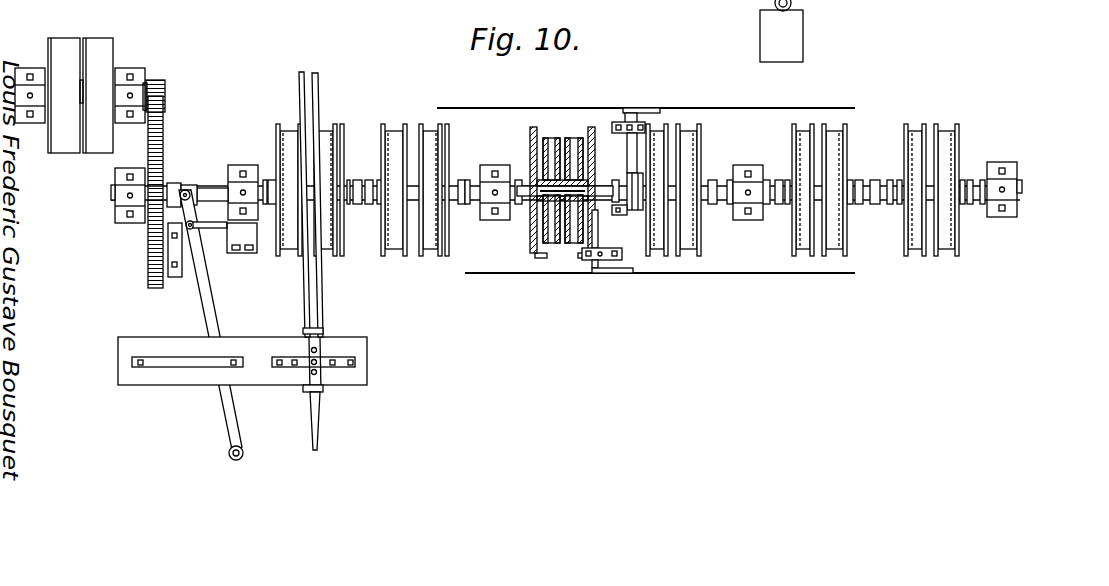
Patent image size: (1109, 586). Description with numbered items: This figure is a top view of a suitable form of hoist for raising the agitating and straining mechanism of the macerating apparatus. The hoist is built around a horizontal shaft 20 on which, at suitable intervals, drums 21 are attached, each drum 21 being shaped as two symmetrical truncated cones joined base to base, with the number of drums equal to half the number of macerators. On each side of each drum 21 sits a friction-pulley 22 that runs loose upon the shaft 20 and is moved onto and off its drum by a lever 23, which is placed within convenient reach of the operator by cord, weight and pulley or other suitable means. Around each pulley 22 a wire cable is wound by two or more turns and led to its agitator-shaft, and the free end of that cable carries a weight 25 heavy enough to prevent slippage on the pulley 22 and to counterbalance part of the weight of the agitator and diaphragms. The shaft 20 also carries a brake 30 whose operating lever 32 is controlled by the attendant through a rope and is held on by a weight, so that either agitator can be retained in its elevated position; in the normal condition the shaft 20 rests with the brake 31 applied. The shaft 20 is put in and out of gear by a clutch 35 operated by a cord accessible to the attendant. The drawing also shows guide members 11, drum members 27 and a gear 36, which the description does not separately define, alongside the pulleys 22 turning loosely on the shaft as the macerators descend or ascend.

The guide rails 11 is at (646, 192).
The horizontal shaft 20 is at (1020, 189).
The drum 21 is at (300, 128).
The friction-pulley 22 is at (622, 202).
The lever 23 is at (625, 193).
The weight 25 is at (781, 31).
The drums 27 is at (416, 130).
The brake 30 is at (310, 215).
The brake 31 is at (242, 349).
The operating lever 32 is at (326, 417).
The clutch 35 is at (212, 306).
The gear 36 is at (170, 184).